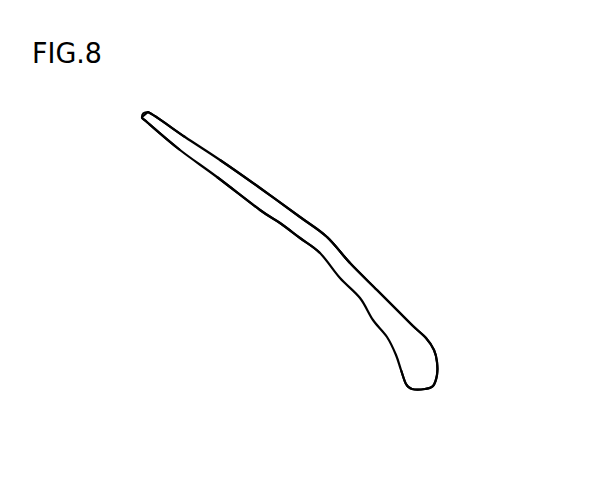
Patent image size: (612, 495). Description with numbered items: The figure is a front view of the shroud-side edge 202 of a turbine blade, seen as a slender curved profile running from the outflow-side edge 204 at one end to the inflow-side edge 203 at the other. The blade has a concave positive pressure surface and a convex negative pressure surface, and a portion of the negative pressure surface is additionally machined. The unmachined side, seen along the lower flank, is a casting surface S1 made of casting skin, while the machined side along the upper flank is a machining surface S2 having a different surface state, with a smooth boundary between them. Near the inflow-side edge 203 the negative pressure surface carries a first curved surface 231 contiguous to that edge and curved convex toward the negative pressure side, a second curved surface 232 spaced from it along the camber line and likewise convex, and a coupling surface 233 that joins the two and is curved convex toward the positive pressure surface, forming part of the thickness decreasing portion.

The shroud-side edge 202 is at (324, 252).
The inflow-side edge 203 is at (420, 391).
The outflow-side edge 204 is at (143, 111).
The casting surface S1 is at (259, 210).
The machining surface S2 is at (303, 220).
The first curved surface 231 is at (428, 350).
The second curved surface 232 is at (354, 267).
The coupling surface 233 is at (382, 297).